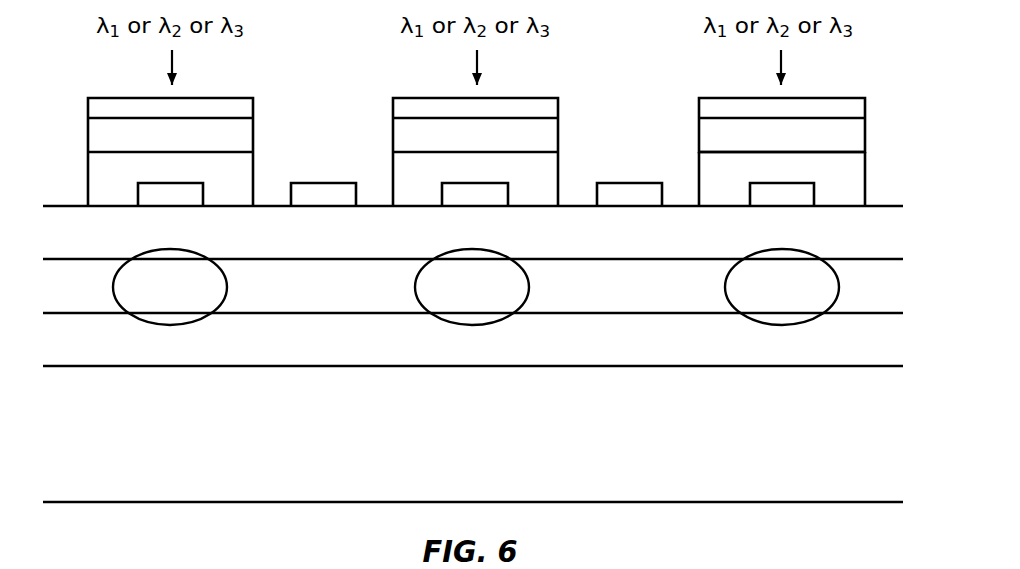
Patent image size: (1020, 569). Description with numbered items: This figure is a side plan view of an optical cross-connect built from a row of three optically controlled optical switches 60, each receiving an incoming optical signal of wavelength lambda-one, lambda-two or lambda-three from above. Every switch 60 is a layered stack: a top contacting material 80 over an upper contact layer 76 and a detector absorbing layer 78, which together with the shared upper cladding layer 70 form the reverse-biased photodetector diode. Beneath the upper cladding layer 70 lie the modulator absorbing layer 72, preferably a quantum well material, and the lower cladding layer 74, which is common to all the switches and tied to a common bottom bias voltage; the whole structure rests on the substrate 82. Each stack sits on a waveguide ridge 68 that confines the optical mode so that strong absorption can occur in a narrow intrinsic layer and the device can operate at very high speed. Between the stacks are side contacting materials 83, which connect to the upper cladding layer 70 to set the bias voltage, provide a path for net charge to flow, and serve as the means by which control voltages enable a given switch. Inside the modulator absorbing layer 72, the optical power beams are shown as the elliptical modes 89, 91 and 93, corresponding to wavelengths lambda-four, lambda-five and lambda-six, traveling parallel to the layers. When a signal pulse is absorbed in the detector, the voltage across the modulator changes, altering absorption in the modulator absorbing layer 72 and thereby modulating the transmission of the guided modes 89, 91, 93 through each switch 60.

The optically controlled optical switch 60 is at (507, 135).
The waveguide ridge 68 is at (151, 192).
The side contacting material 83 is at (608, 183).
The top contacting material 80 is at (840, 98).
The upper contact layer 76 is at (865, 130).
The detector absorbing layer 78 is at (865, 200).
The upper cladding layer 70 is at (50, 249).
The modulator absorbing layer 72 is at (50, 305).
The lower cladding layer 74 is at (50, 359).
The substrate 82 is at (50, 414).
The optical mode 89 is at (203, 315).
The optical mode 91 is at (500, 315).
The optical mode 93 is at (813, 315).